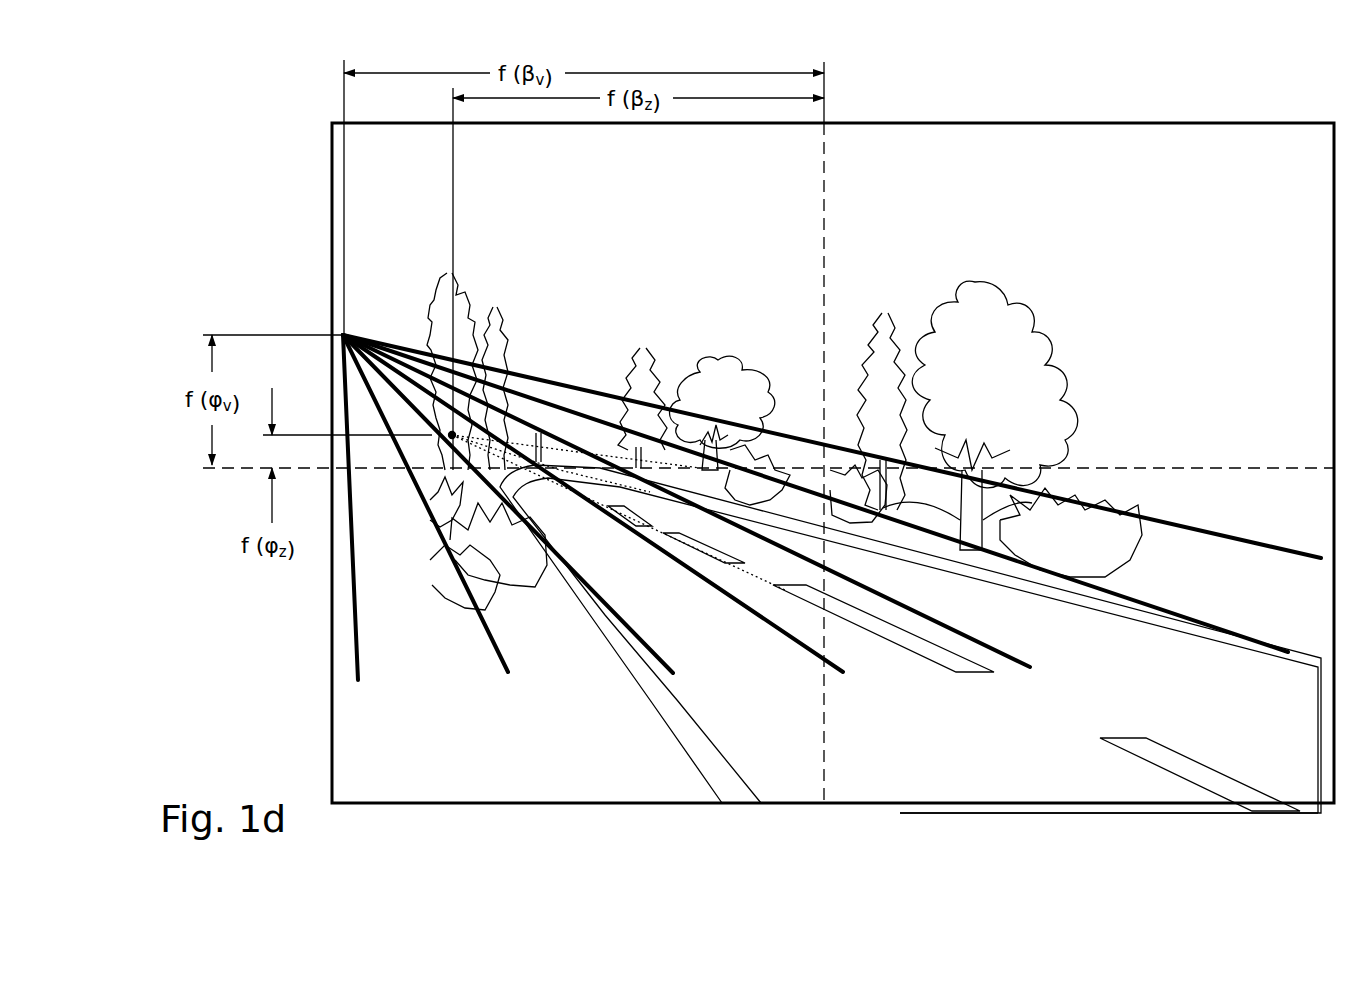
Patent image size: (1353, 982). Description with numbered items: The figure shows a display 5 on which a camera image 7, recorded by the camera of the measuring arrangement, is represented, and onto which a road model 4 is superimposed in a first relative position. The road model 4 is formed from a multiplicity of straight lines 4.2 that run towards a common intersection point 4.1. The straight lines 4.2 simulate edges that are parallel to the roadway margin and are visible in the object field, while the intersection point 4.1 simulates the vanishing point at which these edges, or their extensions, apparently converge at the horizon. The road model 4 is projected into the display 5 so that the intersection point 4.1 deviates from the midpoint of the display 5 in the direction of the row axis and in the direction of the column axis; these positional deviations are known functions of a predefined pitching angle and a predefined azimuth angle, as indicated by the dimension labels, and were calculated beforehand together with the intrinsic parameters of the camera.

The road model 4 is at (224, 190).
The intersection point 4.1 is at (346, 334).
The straight lines 4.2 is at (340, 342).
The display 5 is at (320, 738).
The camera image 7 is at (1017, 167).